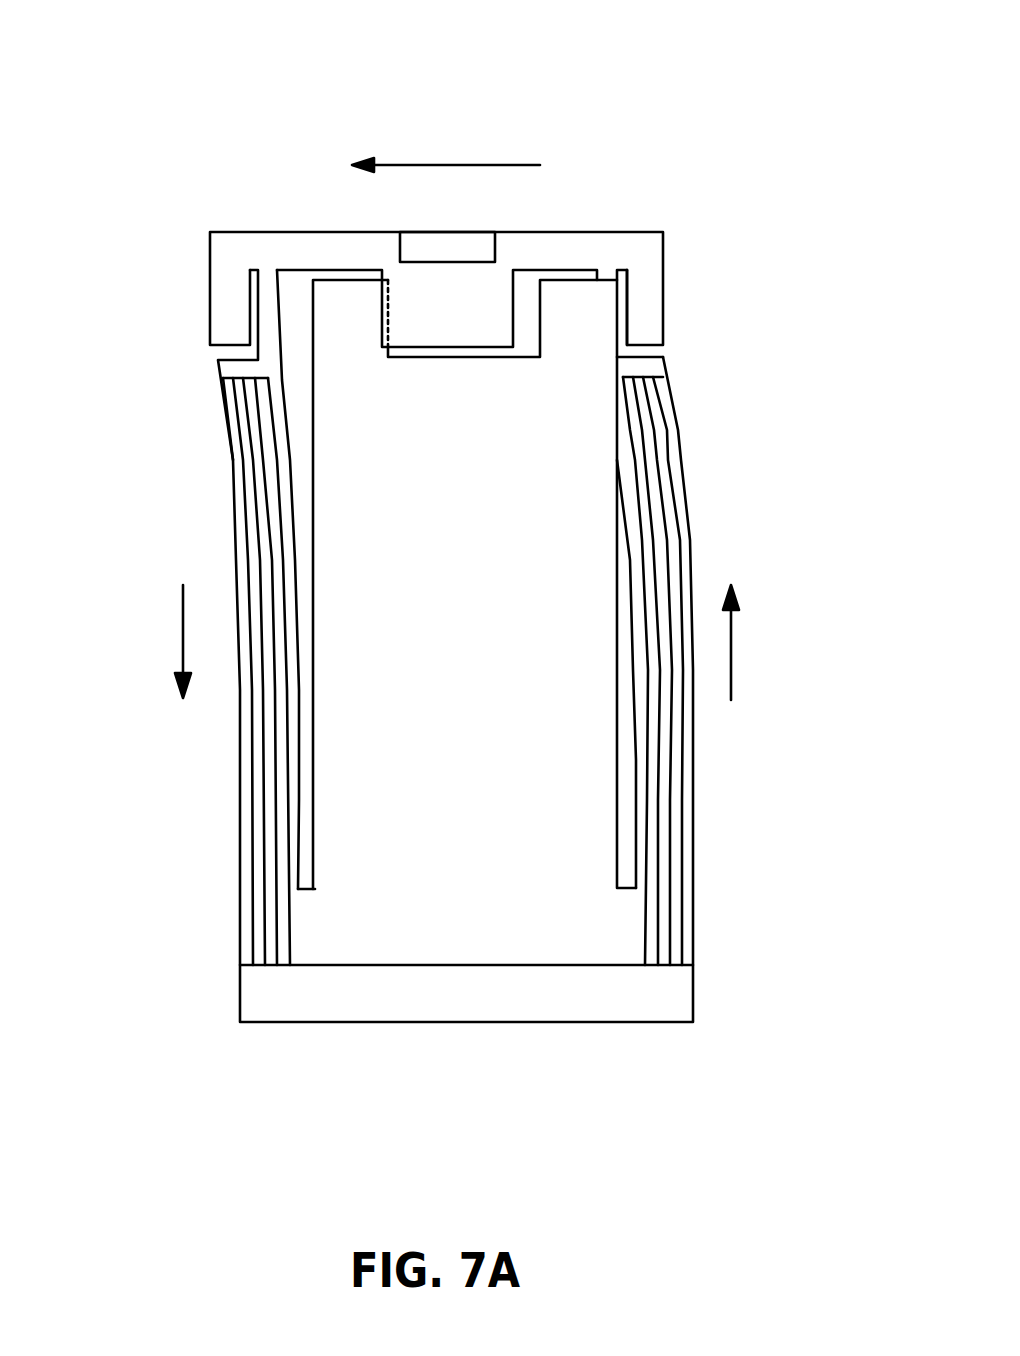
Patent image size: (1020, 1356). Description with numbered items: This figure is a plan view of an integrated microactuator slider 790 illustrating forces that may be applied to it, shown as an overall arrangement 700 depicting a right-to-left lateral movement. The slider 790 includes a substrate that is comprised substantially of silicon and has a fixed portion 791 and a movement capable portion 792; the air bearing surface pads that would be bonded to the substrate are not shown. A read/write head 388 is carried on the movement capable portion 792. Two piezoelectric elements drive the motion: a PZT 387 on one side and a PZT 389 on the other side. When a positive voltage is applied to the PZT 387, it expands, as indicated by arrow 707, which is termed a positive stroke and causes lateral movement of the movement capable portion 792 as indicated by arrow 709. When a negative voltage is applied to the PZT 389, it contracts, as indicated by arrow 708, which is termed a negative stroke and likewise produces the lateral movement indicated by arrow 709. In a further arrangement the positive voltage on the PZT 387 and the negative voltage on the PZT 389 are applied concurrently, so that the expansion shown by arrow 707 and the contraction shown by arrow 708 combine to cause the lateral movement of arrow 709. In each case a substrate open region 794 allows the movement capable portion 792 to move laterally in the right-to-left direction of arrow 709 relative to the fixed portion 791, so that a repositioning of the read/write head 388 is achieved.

The actuator assembly 700 is at (736, 43).
The arrow 709 is at (483, 162).
The read/write head 388 is at (463, 252).
The substrate open region 794 is at (297, 298).
The movement capable portion 792 is at (653, 300).
The PZT 389 is at (265, 482).
The PZT 387 is at (643, 525).
The arrow 708 is at (183, 642).
The arrow 707 is at (731, 640).
The integrated microactuator slider 790 is at (693, 1003).
The fixed portion 791 is at (486, 888).